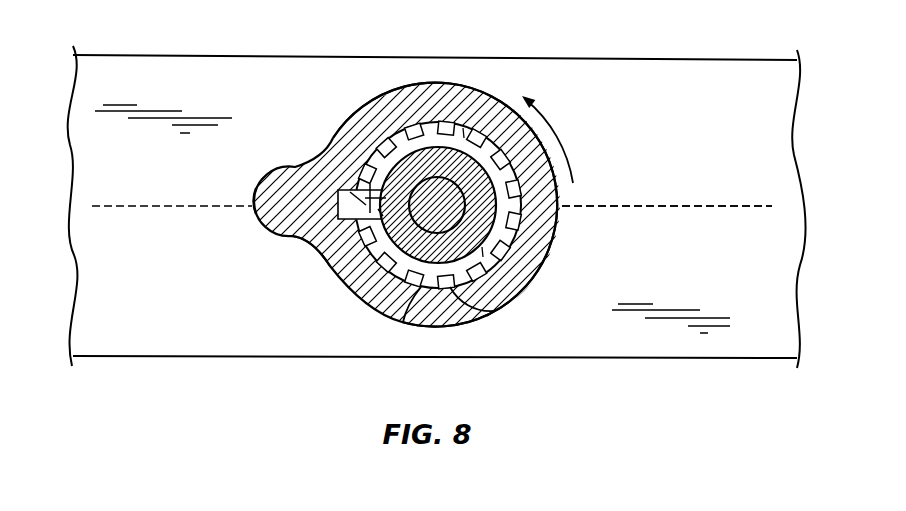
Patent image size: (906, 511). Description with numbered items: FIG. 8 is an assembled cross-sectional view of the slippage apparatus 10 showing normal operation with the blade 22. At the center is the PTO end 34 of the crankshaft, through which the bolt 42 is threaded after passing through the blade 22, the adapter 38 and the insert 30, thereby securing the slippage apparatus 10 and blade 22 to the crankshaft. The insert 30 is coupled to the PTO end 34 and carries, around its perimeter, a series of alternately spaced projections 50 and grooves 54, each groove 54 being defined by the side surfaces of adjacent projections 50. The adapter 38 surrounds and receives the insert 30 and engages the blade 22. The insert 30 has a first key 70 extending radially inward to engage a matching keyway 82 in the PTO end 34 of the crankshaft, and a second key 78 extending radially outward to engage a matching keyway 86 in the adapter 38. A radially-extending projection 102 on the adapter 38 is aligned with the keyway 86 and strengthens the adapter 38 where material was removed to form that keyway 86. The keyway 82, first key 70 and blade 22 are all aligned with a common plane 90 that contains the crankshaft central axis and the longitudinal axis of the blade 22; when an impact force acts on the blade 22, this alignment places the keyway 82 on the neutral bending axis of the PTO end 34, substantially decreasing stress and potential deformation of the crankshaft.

The slippage apparatus 10 is at (353, 86).
The blade 22 is at (125, 70).
The insert 30 is at (452, 124).
The PTO end 34 is at (480, 207).
The adapter 38 is at (497, 308).
The bolt 42 is at (423, 190).
The projections 50 is at (543, 272).
The grooves 54 is at (424, 326).
The first key 70 is at (362, 238).
The second key 78 is at (330, 196).
The keyway 82 is at (369, 188).
The keyway 86 is at (316, 239).
The plane 90 is at (693, 206).
The radially-extending projection 102 is at (257, 214).